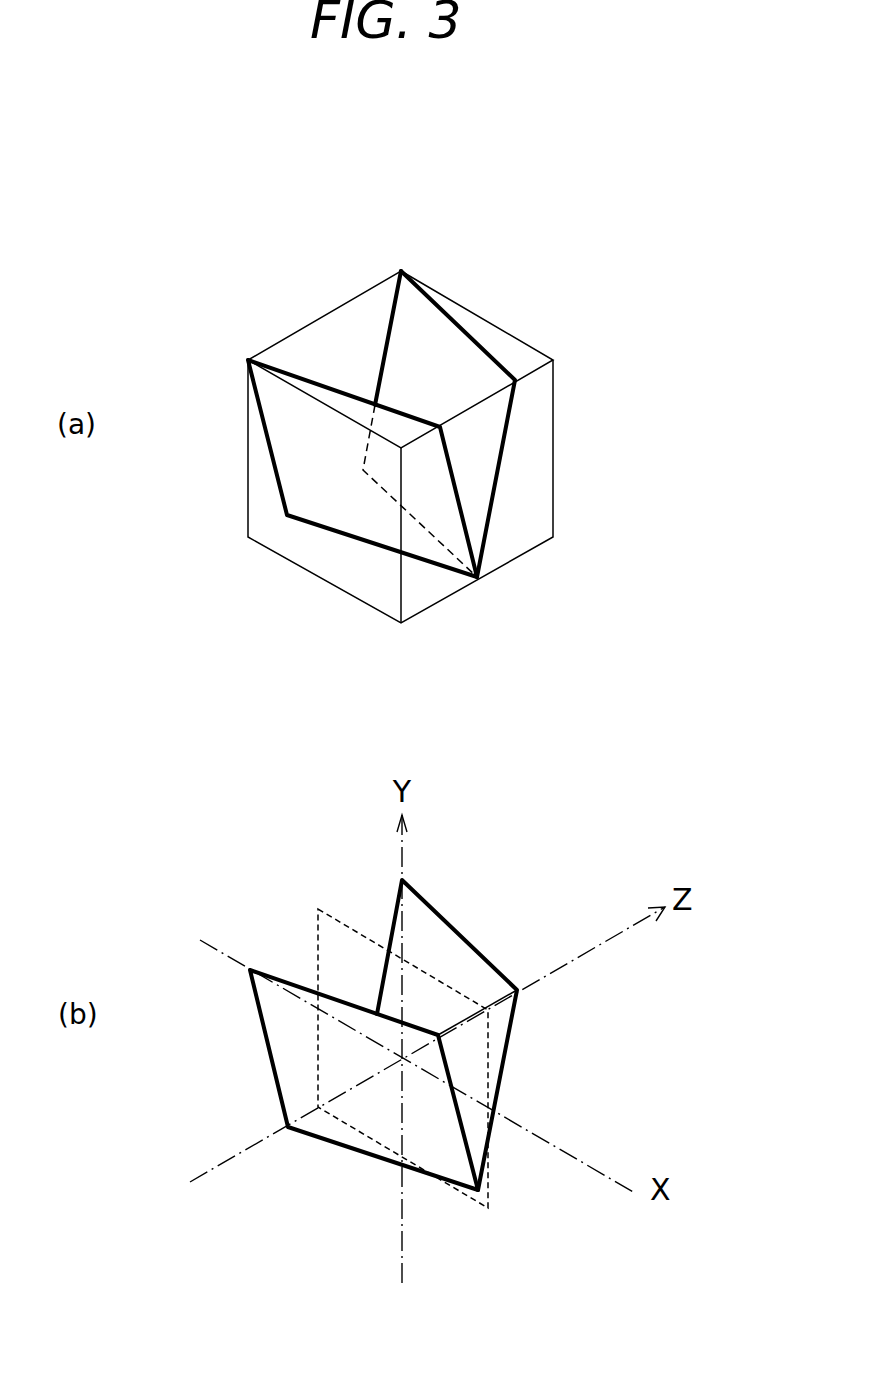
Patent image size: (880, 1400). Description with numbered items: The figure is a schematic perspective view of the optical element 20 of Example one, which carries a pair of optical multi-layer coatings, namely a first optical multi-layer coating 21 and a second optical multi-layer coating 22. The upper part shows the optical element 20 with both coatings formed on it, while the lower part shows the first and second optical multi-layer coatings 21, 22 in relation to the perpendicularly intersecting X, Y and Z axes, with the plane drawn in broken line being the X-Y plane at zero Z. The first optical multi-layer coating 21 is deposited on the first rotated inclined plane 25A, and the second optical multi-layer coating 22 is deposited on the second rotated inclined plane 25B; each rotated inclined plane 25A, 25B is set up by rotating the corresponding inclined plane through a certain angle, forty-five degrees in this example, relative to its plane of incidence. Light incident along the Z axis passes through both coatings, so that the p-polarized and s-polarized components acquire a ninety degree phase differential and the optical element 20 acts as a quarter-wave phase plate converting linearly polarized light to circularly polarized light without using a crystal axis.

The optical element 20 is at (497, 322).
The first optical multi-layer coating 21 is at (561, 730).
The second optical multi-layer coating 22 is at (340, 813).
The first rotated inclined plane 25A is at (507, 445).
The second rotated inclined plane 25B is at (332, 518).